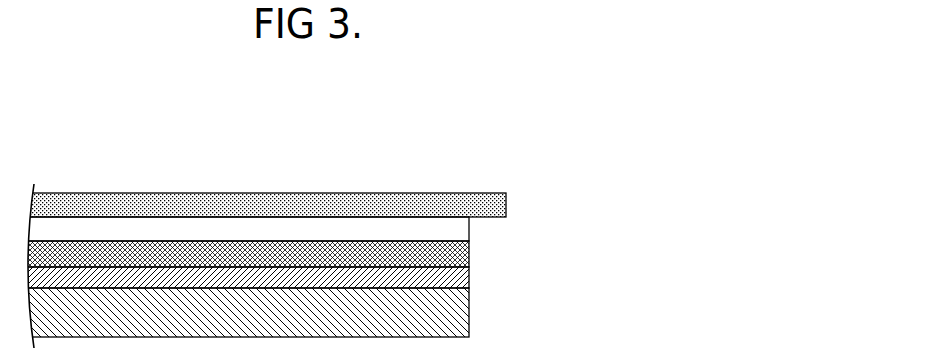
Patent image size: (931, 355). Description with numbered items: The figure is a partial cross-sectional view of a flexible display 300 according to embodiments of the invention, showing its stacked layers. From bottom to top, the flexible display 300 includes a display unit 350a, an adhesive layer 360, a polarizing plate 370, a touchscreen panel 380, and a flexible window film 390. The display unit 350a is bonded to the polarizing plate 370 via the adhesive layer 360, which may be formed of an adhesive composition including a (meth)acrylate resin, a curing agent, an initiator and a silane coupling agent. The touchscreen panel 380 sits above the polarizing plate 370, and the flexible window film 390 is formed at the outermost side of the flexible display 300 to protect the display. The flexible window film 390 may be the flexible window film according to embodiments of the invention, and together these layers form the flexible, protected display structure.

The flexible display 300 is at (415, 162).
The flexible window film 390 is at (495, 203).
The touchscreen panel 380 is at (458, 231).
The polarizing plate 370 is at (460, 253).
The adhesive layer 360 is at (462, 278).
The display unit 350a is at (460, 302).